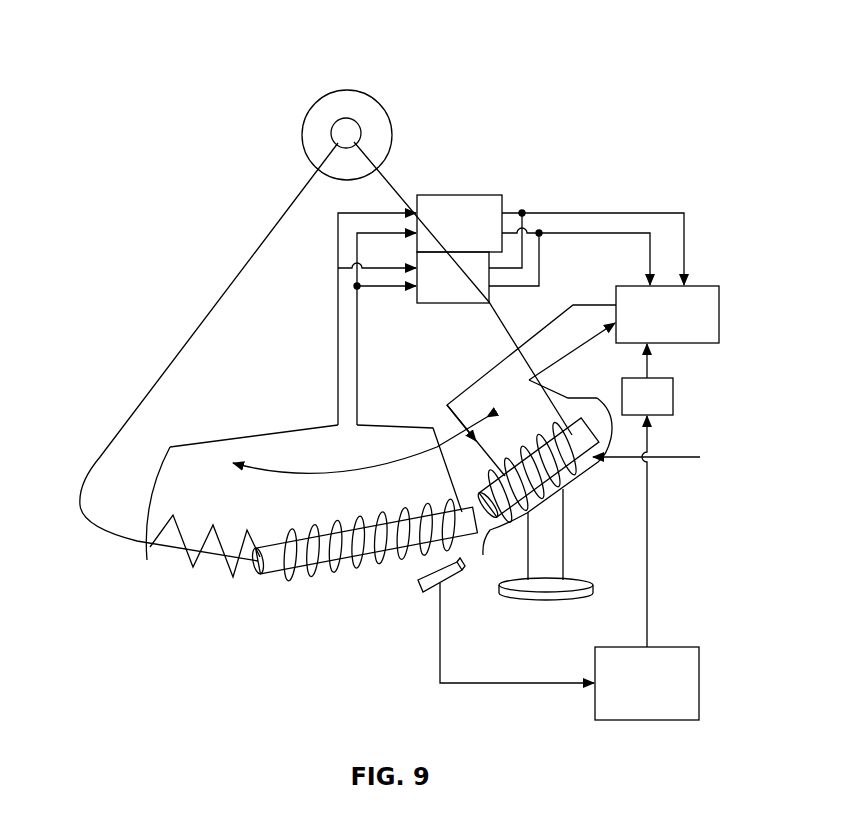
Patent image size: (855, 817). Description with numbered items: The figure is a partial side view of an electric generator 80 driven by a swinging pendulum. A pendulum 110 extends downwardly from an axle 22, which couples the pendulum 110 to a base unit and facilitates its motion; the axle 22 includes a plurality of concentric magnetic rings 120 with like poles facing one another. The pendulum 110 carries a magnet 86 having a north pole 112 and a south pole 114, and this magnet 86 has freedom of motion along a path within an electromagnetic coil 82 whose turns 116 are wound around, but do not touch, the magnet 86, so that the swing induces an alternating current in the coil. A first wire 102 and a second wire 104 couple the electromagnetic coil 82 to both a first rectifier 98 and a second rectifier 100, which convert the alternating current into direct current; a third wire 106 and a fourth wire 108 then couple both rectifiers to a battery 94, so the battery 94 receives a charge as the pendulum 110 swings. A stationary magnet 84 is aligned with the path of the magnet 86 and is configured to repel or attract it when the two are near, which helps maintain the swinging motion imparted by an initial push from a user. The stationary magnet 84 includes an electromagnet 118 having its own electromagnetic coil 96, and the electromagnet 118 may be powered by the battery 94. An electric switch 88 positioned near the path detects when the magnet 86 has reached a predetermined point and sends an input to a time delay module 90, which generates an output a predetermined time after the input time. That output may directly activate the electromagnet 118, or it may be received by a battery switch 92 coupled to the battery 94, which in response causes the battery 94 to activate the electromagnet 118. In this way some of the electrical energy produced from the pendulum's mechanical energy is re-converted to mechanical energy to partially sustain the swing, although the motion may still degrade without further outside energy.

The electric generator 80 is at (606, 40).
The axle 22 is at (361, 133).
The concentric magnetic rings 120 is at (302, 130).
The first rectifier 98 is at (472, 195).
The second rectifier 100 is at (447, 303).
The first wire 102 is at (338, 305).
The second wire 104 is at (357, 348).
The third wire 106 is at (663, 212).
The fourth wire 108 is at (607, 232).
The battery 94 is at (702, 285).
The battery switch 92 is at (673, 380).
The time delay module 90 is at (675, 647).
The pendulum 110 is at (145, 393).
The electromagnet 118 is at (533, 443).
The electromagnetic coil 96 is at (568, 480).
The north pole 112 is at (460, 510).
The south pole 114 is at (273, 543).
The turns 116 is at (178, 543).
The electromagnetic coil 82 is at (147, 548).
The magnet 86 is at (330, 567).
The stationary magnet 84 is at (490, 540).
The electric switch 88 is at (425, 593).